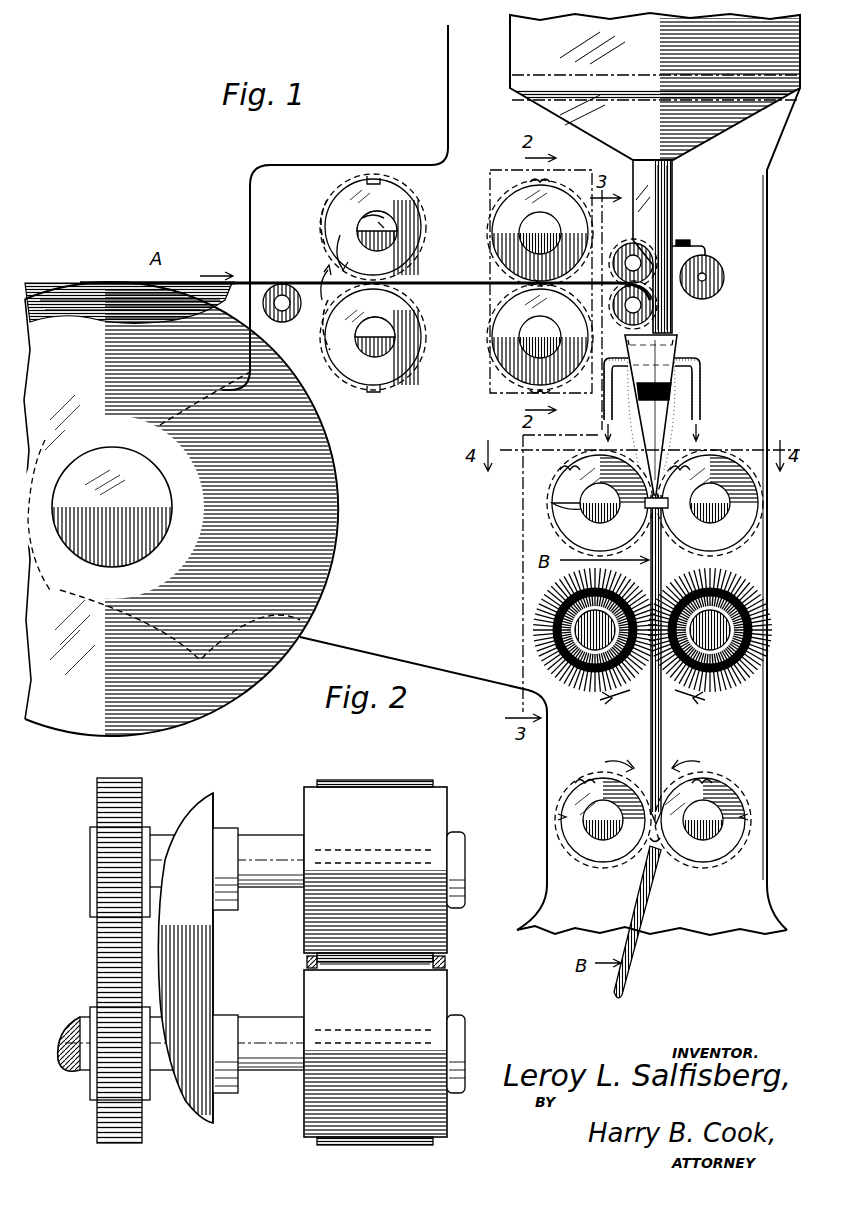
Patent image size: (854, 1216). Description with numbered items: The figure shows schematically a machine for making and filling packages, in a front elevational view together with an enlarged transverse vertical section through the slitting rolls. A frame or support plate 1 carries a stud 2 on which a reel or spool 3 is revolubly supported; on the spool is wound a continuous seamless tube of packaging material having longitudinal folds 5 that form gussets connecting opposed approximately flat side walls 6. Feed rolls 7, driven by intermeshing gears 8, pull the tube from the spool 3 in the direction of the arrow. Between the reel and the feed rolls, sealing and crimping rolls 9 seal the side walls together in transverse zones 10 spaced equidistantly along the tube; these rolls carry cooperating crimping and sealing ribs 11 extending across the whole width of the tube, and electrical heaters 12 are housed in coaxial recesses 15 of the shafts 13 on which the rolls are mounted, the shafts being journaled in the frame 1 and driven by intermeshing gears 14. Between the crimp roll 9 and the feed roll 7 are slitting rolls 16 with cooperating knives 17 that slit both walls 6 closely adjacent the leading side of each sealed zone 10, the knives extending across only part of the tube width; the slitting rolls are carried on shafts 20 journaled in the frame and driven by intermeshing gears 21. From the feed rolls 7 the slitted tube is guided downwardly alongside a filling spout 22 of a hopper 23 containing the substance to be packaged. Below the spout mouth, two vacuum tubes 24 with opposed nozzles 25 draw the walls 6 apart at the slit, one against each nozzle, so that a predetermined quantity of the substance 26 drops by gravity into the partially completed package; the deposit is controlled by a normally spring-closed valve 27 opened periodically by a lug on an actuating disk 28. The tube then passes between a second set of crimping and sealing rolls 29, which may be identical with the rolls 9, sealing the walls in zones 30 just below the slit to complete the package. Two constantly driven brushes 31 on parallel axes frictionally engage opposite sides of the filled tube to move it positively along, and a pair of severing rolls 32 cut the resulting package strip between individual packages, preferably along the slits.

In FIG. 1, the frame or support plate 1 is at (250, 201).
In FIG. 1, the stud 2 is at (82, 548).
In FIG. 1, the reel or spool 3 is at (90, 283).
In FIG. 2, the longitudinal folds 5 is at (306, 961).
In FIG. 1, the side walls 6 is at (678, 345).
In FIG. 1, the feed rolls 7 is at (657, 262).
In FIG. 1, the intermeshing gears 8 is at (624, 244).
In FIG. 1, the sealing and crimping rolls 9 is at (405, 210).
In FIG. 1, the transverse zones 10 is at (535, 285).
In FIG. 1, the crimping and sealing ribs 11 is at (372, 178).
In FIG. 1, the electrical heaters 12 is at (368, 230).
In FIG. 1, the shafts 13 is at (379, 222).
In FIG. 1, the intermeshing gears 14 is at (335, 192).
In FIG. 1, the coaxial recesses 15 is at (372, 218).
In FIG. 1, the slitting rolls 16 is at (505, 210).
In FIG. 2, the slitting rolls 16 is at (430, 815).
In FIG. 1, the knives 17 is at (545, 183).
In FIG. 2, the knives 17 is at (425, 780).
In FIG. 2, the shafts 20 is at (252, 835).
In FIG. 1, the intermeshing gears 21 is at (586, 186).
In FIG. 2, the intermeshing gears 21 is at (105, 975).
In FIG. 1, the filling spout 22 is at (672, 330).
In FIG. 1, the hopper 23 is at (728, 118).
In FIG. 1, the vacuum tubes 24 is at (700, 396).
In FIG. 1, the nozzles 25 is at (680, 360).
In FIG. 1, the substance 26 is at (666, 392).
In FIG. 1, the valve 27 is at (700, 248).
In FIG. 1, the actuating disk 28 is at (722, 272).
In FIG. 1, the second set of crimping and sealing rolls 29 is at (575, 507).
In FIG. 1, the zones 30 is at (656, 848).
In FIG. 1, the brushes 31 is at (545, 630).
In FIG. 1, the severing rolls 32 is at (568, 810).